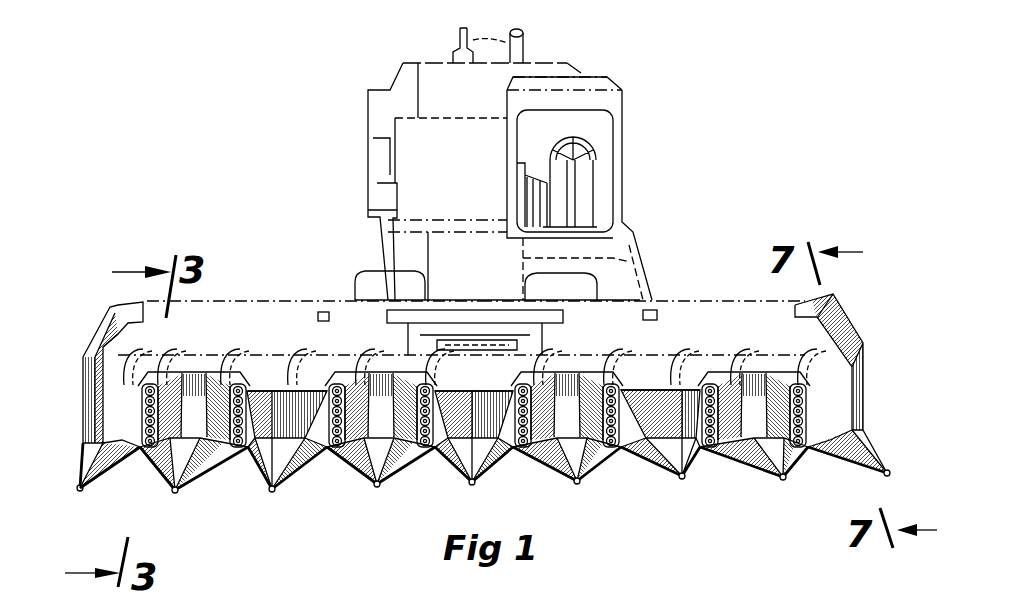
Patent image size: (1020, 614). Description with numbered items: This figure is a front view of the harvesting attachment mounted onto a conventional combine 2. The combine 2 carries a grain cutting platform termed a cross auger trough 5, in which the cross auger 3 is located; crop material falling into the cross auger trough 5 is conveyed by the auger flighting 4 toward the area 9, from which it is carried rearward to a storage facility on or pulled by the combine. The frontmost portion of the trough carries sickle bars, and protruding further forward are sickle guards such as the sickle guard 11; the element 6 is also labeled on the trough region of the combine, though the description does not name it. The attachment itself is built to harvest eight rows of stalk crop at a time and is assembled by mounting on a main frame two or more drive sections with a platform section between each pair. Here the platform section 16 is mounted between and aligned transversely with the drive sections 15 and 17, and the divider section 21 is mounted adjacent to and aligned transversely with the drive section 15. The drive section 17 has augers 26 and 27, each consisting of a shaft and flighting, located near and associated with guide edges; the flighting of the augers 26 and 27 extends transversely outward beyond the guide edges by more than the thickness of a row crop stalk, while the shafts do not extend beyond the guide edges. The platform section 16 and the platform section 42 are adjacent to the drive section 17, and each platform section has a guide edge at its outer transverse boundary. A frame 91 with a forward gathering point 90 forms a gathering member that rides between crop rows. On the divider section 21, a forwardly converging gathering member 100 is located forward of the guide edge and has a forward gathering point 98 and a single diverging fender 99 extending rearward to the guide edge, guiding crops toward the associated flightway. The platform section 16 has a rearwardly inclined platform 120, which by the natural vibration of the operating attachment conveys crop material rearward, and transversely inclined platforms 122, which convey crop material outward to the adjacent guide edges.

The combine 2 is at (586, 64).
The cross auger 3 is at (571, 353).
The auger flighting 4 is at (233, 355).
The cross auger trough 5 is at (296, 306).
The header frame rear wall 6 is at (731, 302).
The area 9 is at (407, 334).
The sickle guard 11 is at (458, 434).
The drive section 15 is at (182, 492).
The platform section 16 is at (288, 491).
The drive section 17 is at (393, 489).
The divider section 21 is at (70, 448).
The auger 26 is at (313, 455).
The auger 27 is at (401, 465).
The platform section 42 is at (508, 465).
The forward gathering point 90 is at (475, 484).
The frame 91 is at (455, 465).
The forward gathering point 98 is at (78, 491).
The diverging fender 99 is at (117, 467).
The forwardly converging gathering member 100 is at (88, 493).
The rearwardly inclined platform 120 is at (276, 393).
The transversely inclined platform 122 is at (197, 452).